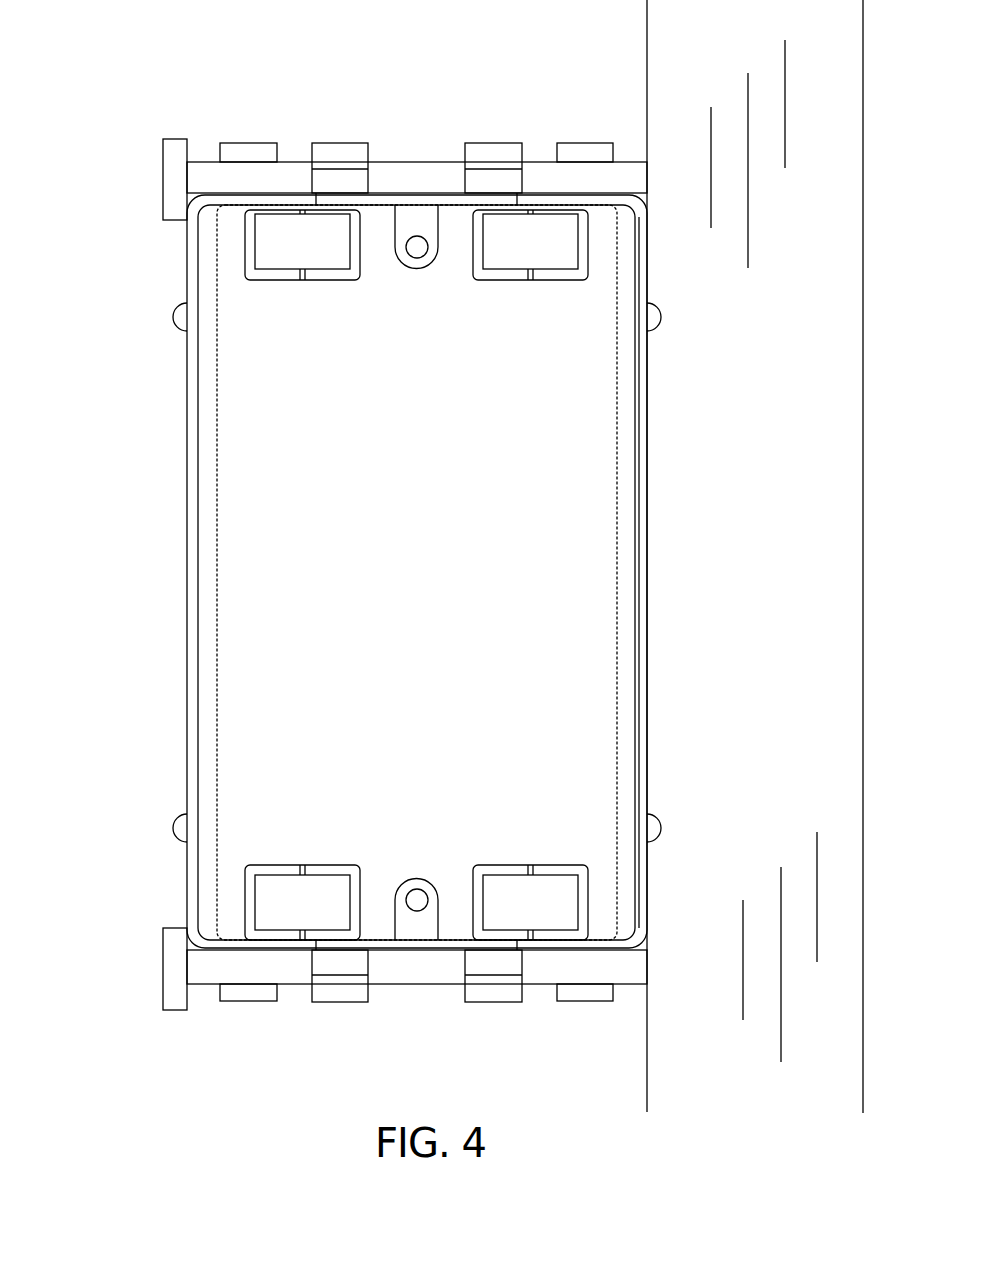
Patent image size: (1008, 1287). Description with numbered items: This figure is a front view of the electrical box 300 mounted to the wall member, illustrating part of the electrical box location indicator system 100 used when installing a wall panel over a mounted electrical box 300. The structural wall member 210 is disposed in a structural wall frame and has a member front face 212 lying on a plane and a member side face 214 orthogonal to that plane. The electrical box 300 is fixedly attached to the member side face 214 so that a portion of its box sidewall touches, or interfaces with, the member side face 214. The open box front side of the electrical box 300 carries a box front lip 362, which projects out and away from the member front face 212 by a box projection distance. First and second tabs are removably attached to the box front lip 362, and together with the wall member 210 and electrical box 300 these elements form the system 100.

The electrical box location indicator system 100 is at (460, 586).
The structural wall member 210 is at (677, 566).
The member front face 212 is at (683, 114).
The member side face 214 is at (643, 1035).
The electrical box 300 is at (359, 574).
The box front lip 362 is at (190, 723).